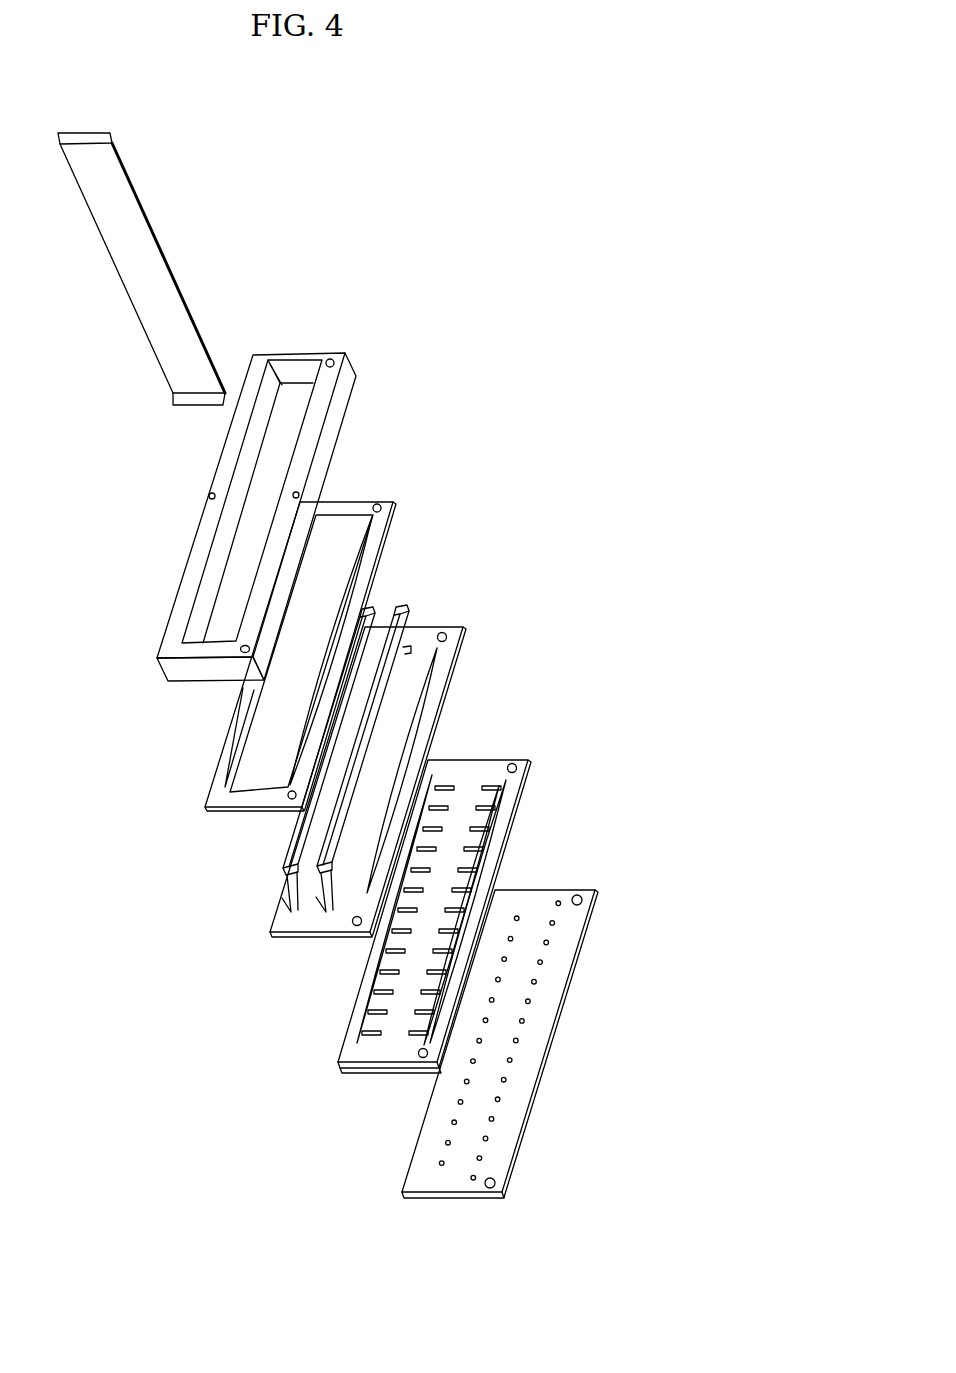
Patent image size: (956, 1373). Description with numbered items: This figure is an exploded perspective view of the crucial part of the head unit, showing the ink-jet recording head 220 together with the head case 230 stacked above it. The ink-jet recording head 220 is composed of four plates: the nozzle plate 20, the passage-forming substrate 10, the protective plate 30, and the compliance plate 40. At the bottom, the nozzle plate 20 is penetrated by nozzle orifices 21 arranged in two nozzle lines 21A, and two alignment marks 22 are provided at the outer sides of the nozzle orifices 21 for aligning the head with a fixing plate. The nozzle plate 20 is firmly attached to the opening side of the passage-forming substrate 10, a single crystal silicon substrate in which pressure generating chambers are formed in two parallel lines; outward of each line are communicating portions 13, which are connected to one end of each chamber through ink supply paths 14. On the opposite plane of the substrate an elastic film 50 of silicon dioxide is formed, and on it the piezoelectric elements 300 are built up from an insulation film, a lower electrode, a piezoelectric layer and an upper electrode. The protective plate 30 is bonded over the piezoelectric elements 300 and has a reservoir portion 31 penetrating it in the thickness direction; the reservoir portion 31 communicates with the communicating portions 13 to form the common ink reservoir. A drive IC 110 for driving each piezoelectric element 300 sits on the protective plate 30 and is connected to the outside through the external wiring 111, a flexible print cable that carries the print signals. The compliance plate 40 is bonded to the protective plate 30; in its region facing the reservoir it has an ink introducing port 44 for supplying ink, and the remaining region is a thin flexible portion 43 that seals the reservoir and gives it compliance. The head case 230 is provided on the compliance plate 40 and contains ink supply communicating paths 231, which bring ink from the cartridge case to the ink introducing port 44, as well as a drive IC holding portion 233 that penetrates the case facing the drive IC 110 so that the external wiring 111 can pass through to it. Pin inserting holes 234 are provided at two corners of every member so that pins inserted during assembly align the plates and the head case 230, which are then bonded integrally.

The external wiring 111 is at (155, 287).
The head case 230 is at (347, 393).
The drive IC holding portion 233 is at (250, 463).
The ink supply communicating path 231 is at (297, 493).
The pin inserting hole 234 is at (328, 358).
The compliance plate 40 is at (395, 502).
The flexible portion 43 is at (313, 730).
The ink introducing port 44 is at (366, 610).
The drive IC 110 is at (402, 610).
The protective plate 30 is at (459, 640).
The reservoir portion 31 is at (418, 707).
The passage-forming substrate 10 is at (462, 760).
The piezoelectric element 300 is at (362, 1040).
The communicating portion 13 is at (507, 812).
The ink supply path 14 is at (487, 855).
The elastic film 50 is at (400, 1053).
The nozzle plate 20 is at (537, 890).
The nozzle orifice 21 is at (538, 980).
The nozzle line 21A is at (438, 1187).
The alignment mark 22 is at (475, 1178).
The ink-jet recording head 220 is at (660, 830).